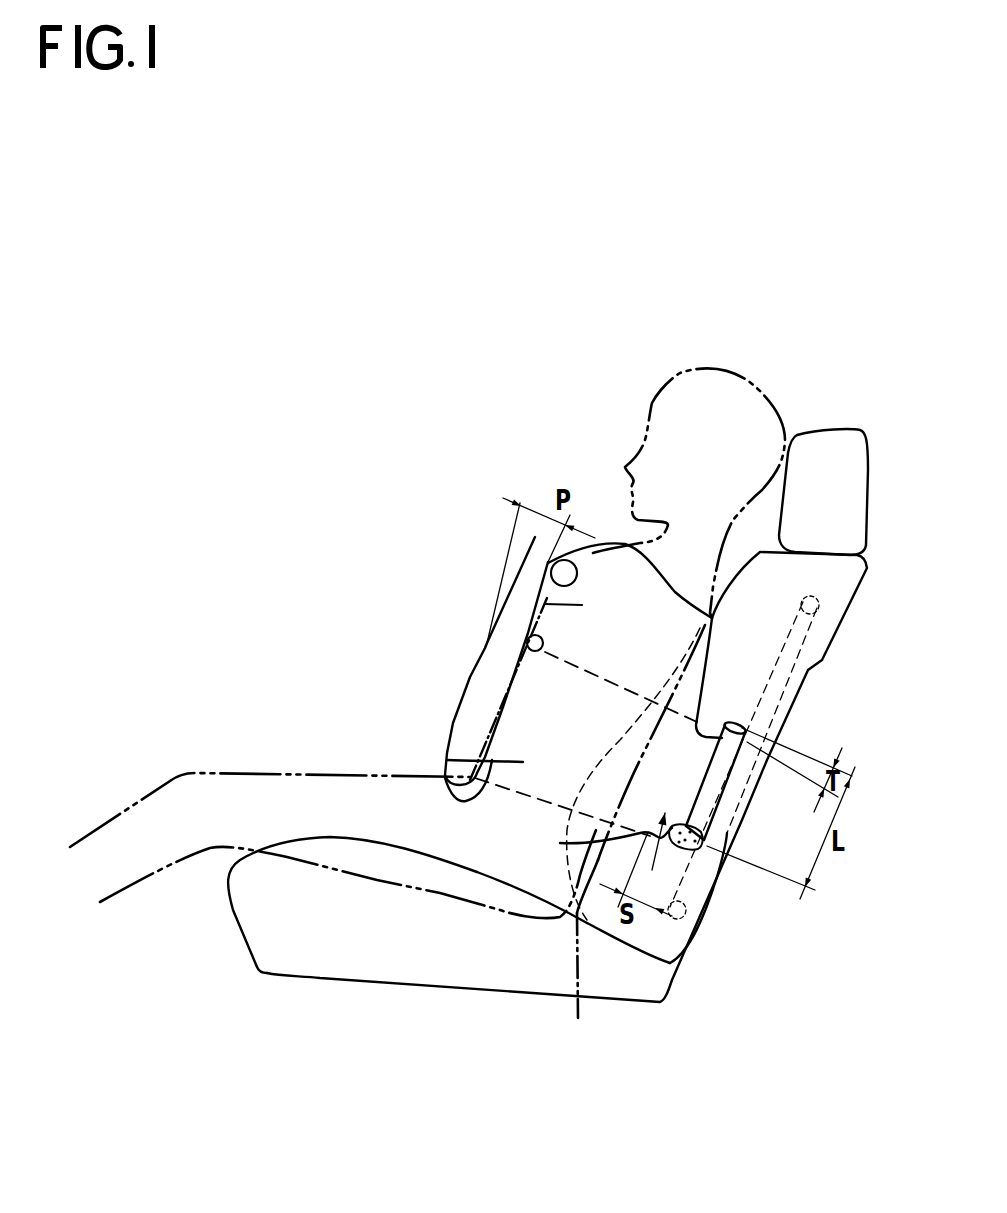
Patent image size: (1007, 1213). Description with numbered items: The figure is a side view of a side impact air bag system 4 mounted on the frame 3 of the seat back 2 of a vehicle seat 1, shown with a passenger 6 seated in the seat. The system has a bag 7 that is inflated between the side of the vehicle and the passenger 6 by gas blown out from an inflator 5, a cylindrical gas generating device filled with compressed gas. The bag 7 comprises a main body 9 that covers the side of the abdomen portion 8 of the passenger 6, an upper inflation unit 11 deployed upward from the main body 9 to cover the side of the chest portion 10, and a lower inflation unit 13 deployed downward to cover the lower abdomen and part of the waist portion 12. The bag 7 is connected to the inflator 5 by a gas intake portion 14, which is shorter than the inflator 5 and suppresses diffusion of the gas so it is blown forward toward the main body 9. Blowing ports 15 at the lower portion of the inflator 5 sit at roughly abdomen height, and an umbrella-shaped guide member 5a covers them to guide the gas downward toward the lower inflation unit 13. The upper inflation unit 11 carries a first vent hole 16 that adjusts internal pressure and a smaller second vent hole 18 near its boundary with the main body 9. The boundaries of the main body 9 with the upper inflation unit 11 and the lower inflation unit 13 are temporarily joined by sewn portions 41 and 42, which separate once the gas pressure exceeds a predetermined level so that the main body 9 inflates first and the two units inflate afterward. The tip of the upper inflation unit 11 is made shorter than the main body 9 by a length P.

The vehicle seat 1 is at (714, 985).
The seat back 2 is at (815, 650).
The frame 3 is at (772, 702).
The side impact air bag system 4 is at (683, 858).
The inflator 5 is at (734, 725).
The guide member 5a is at (707, 848).
The passenger 6 is at (648, 393).
The bag 7 is at (427, 711).
The abdomen portion 8 is at (450, 759).
The main body 9 is at (522, 687).
The chest portion 10 is at (520, 593).
The upper inflation unit 11 is at (620, 577).
The waist portion 12 is at (583, 955).
The lower inflation unit 13 is at (505, 812).
The gas intake portion 14 is at (690, 877).
The blowing ports 15 is at (700, 838).
The first vent hole 16 is at (550, 562).
The second vent hole 18 is at (527, 640).
The sewn portion 41 is at (590, 673).
The sewn portion 42 is at (460, 802).